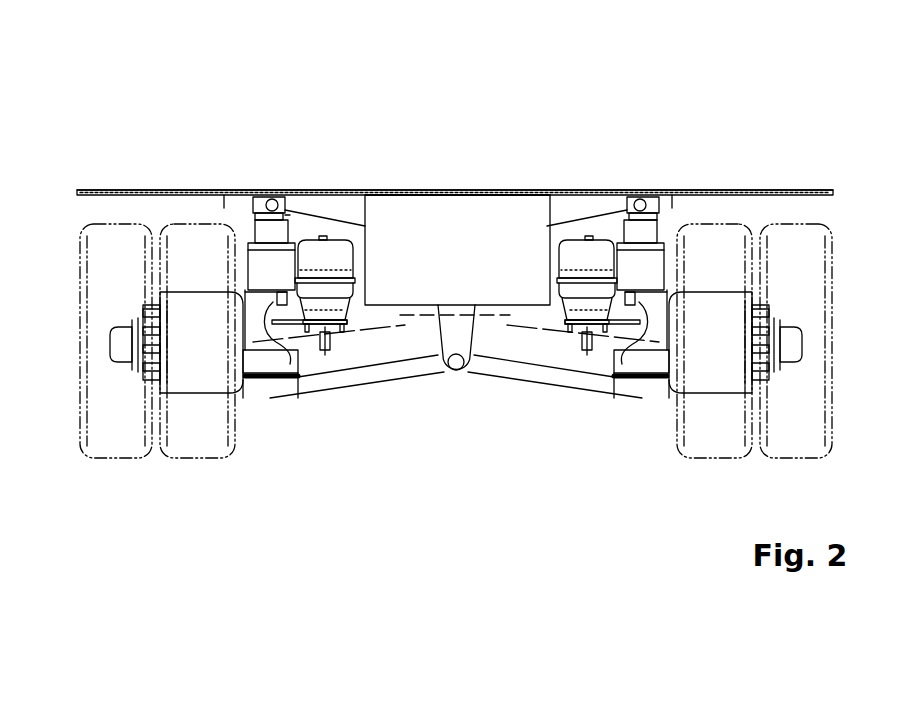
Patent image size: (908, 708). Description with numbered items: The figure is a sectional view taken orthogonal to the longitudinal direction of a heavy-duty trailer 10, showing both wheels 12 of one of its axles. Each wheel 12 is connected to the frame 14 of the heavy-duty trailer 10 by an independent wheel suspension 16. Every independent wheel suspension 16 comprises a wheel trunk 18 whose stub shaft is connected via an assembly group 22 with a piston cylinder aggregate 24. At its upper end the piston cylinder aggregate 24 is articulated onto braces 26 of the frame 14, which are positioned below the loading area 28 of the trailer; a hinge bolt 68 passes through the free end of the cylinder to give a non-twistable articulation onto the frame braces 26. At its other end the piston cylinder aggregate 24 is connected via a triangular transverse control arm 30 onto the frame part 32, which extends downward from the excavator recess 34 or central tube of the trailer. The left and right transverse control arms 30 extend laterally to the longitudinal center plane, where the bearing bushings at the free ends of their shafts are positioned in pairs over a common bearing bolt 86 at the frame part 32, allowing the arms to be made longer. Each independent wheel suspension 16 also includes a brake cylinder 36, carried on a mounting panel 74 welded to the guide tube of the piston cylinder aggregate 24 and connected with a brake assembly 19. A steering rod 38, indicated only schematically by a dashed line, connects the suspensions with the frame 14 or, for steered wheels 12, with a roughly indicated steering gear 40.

The heavy-duty trailer 10 is at (778, 105).
The wheels 12 is at (108, 245).
The frame 14 is at (521, 194).
The independent wheel suspension 16 is at (224, 208).
The wheel trunk 18 is at (446, 417).
The brake assembly 19 is at (187, 340).
The assembly group 22 is at (258, 300).
The piston cylinder aggregate 24 is at (277, 253).
The braces 26 is at (325, 215).
The loading area 28 is at (792, 192).
The triangular transverse control arms 30 is at (347, 380).
The frame part 32 is at (462, 333).
The excavator recess 34 is at (462, 205).
The brake cylinder 36 is at (330, 262).
The steering rod 38 is at (360, 328).
The steering gear 40 is at (418, 315).
The hinge bolt 68 is at (272, 199).
The mounting panel 74 is at (285, 323).
The bearing bolt 86 is at (455, 372).